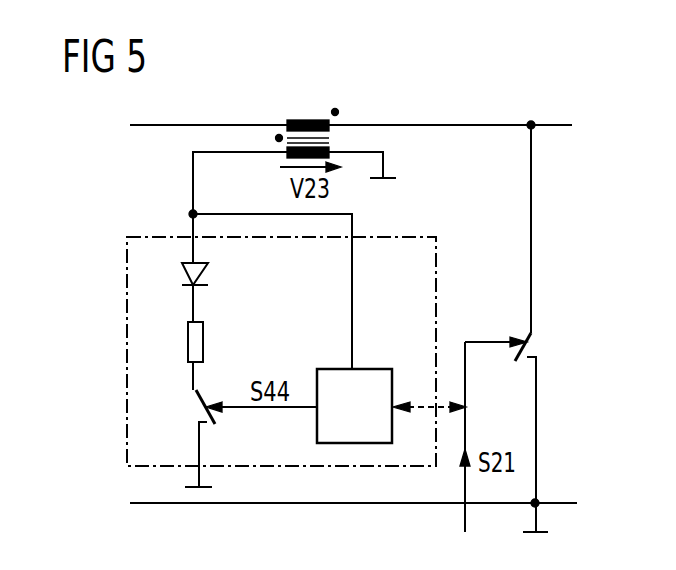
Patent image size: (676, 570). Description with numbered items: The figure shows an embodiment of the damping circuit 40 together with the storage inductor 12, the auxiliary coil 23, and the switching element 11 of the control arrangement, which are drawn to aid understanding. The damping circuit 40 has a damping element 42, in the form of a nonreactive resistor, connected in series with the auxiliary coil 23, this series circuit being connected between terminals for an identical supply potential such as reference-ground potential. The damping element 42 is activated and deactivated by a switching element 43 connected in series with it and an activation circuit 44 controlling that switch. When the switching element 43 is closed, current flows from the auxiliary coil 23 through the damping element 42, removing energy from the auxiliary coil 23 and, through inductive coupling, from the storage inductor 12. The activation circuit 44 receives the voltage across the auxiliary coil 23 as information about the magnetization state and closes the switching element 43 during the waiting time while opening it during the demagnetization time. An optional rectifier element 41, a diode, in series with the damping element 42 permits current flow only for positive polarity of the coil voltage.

The switching element 11 is at (531, 333).
The storage inductor 12 is at (309, 120).
The auxiliary coil 23 is at (287, 156).
The damping circuit 40 is at (127, 345).
The rectifier element 41 is at (206, 280).
The damping element 42 is at (204, 342).
The switching element 43 is at (197, 400).
The activation circuit 44 is at (375, 368).